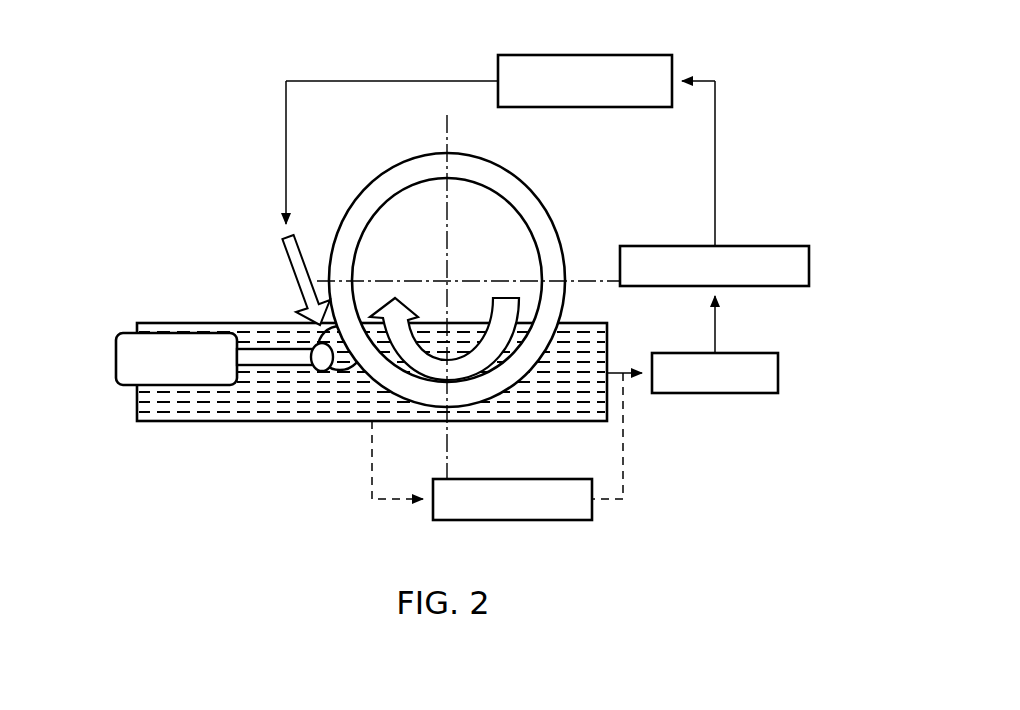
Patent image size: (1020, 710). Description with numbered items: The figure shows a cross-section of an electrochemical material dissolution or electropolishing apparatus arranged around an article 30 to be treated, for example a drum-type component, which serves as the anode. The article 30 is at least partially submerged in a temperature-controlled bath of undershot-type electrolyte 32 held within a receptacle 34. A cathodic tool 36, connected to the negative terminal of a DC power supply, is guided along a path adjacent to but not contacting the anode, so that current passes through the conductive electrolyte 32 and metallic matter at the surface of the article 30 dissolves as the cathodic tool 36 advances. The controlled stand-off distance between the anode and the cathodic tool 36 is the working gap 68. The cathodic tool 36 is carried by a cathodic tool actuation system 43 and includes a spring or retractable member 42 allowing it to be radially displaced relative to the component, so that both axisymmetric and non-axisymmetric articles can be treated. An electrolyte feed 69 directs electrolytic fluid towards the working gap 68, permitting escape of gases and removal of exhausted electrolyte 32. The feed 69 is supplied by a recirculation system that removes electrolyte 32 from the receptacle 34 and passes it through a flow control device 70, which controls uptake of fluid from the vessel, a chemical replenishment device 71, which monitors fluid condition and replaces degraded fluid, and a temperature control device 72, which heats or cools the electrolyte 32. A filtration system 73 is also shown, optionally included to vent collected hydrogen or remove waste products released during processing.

The article 30 is at (388, 172).
The electrolyte 32 is at (218, 410).
The receptacle 34 is at (148, 422).
The cathodic tool 36 is at (322, 360).
The retractable member 42 is at (262, 346).
The cathodic tool actuation system 43 is at (133, 358).
The working gap 68 is at (348, 368).
The electrolyte feed 69 is at (282, 260).
The flow control device 70 is at (768, 376).
The chemical replenishment device 71 is at (795, 270).
The temperature control device 72 is at (585, 82).
The filtration system 73 is at (513, 500).